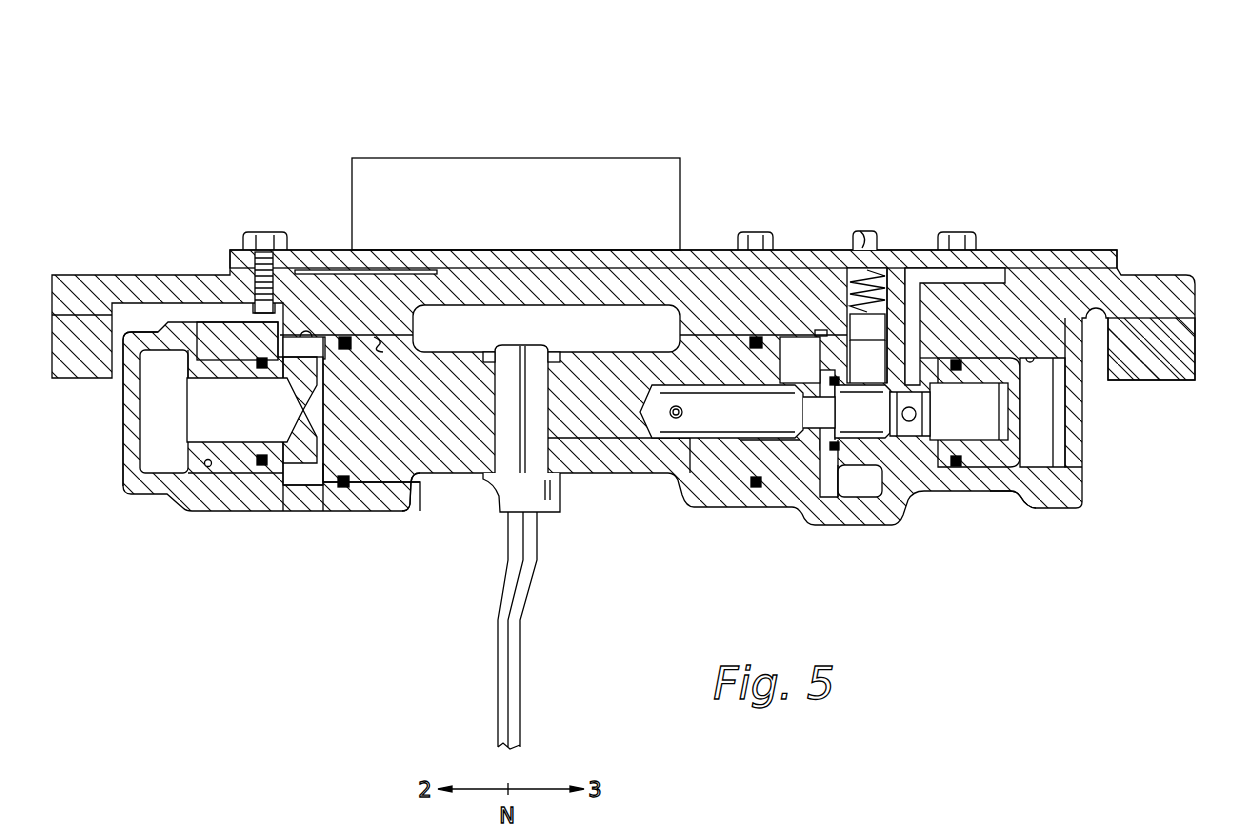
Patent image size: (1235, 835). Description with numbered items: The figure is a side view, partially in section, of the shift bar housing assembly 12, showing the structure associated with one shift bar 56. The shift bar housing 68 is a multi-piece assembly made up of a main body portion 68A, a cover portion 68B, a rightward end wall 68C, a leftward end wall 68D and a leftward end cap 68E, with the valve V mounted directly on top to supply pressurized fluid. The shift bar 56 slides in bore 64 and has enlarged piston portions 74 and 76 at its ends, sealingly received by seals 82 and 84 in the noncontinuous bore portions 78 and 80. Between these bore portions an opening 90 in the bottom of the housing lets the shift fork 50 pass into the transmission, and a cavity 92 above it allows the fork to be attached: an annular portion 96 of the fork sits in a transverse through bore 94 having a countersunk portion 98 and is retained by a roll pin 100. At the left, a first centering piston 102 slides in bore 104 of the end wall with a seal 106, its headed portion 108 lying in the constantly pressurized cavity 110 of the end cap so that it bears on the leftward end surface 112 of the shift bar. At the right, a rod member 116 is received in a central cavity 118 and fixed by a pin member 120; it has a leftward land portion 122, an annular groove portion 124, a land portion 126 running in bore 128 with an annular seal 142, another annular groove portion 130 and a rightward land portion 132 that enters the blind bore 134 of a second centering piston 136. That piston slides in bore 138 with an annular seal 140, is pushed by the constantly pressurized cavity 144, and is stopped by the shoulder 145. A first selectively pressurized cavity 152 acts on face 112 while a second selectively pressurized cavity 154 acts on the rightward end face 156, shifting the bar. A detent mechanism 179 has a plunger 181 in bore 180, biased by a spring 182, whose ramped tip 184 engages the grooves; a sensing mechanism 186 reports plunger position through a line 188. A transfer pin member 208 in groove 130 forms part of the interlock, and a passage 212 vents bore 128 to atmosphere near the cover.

The shift bar housing assembly 12 is at (1188, 256).
The shift fork 50 is at (521, 674).
The shift bar 56 is at (407, 411).
The bore 64 is at (398, 340).
The shift bar housing 68 is at (1124, 270).
The main body portion 68A is at (704, 311).
The cover portion 68B is at (792, 258).
The rightward end wall 68C is at (1074, 492).
The leftward end wall 68D is at (236, 500).
The leftward end cap 68E is at (128, 464).
The piston portion 74 is at (362, 476).
The piston portion 76 is at (699, 476).
The bore portion 78 is at (328, 333).
The bore portion 80 is at (820, 330).
The annular seal 82 is at (344, 489).
The annular seal 84 is at (756, 488).
The opening 90 is at (434, 508).
The cavity 92 is at (619, 333).
The through bore 94 is at (543, 412).
The annular portion 96 is at (555, 455).
The countersunk portion 98 is at (488, 352).
The roll pin 100 is at (556, 352).
The first centering piston 102 is at (216, 372).
The bore 104 is at (207, 467).
The seal 106 is at (262, 368).
The headed portion 108 is at (188, 357).
The cavity 110 is at (147, 419).
The leftward end surface 112 is at (325, 360).
The rod member 116 is at (830, 412).
The central cavity 118 is at (688, 386).
The pin member 120 is at (675, 420).
The leftward land portion 122 is at (764, 432).
The annular groove portion 124 is at (855, 433).
The land portion 126 is at (841, 429).
The bore 128 is at (912, 422).
The annular groove portion 130 is at (930, 385).
The rightward end land portion 132 is at (958, 411).
The blind bore 134 is at (957, 362).
The centering piston 136 is at (1012, 396).
The bore 138 is at (1031, 356).
The annular seal 140 is at (987, 505).
The annular seal 142 is at (840, 450).
The cavity 144 is at (1040, 445).
The shoulder 145 is at (917, 413).
The first selectively pressurized cavity 152 is at (304, 478).
The second selectively pressurized cavity 154 is at (812, 374).
The rightwardly facing end face 156 is at (772, 352).
The detent mechanism 179 is at (893, 308).
The bore 180 is at (880, 267).
The plunger 181 is at (875, 336).
The spring 182 is at (889, 300).
The ramped tip 184 is at (864, 361).
The sensing mechanism 186 is at (852, 245).
The line 188 is at (862, 231).
The transfer pin member 208 is at (957, 468).
The passage 212 is at (975, 272).
The valve V is at (522, 158).